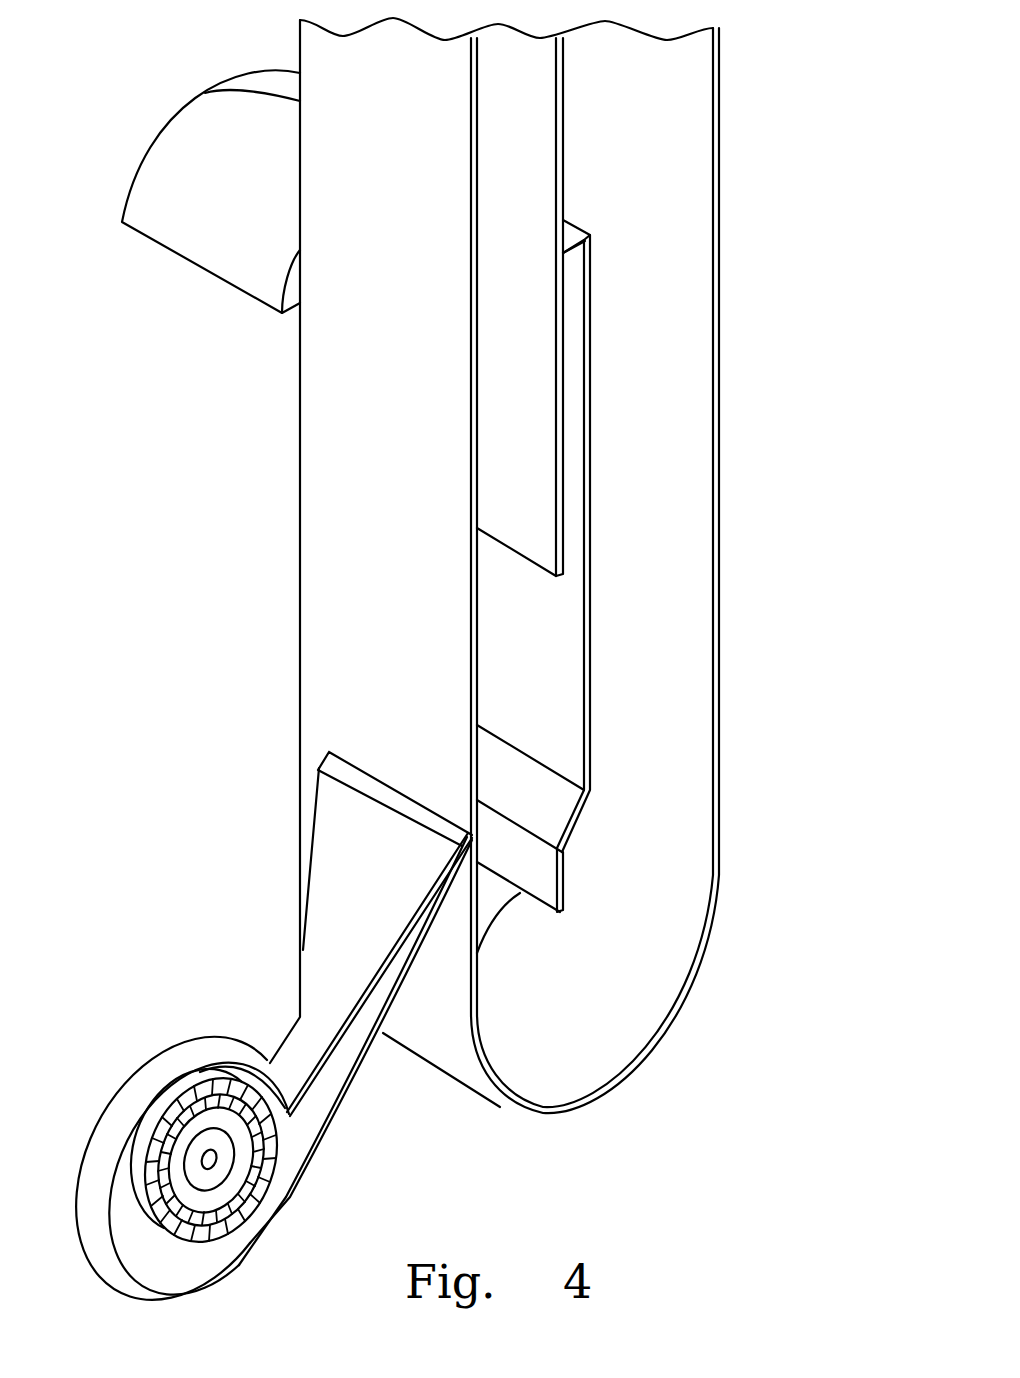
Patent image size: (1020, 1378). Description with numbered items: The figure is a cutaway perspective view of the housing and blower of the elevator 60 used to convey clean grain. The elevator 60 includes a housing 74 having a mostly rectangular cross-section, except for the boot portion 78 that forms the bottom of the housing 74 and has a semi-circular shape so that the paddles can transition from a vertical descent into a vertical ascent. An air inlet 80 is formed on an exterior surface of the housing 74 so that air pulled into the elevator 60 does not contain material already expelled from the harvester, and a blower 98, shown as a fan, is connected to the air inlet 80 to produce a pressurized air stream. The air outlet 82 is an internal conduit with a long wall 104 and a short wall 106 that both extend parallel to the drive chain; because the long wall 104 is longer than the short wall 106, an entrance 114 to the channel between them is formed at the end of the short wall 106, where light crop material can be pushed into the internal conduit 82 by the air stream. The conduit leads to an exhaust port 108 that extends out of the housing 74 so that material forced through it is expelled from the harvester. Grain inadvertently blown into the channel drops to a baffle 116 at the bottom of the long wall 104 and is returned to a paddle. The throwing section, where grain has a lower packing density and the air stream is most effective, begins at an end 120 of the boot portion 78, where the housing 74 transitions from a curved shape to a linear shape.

The elevator 60 is at (768, 352).
The housing 74 is at (720, 742).
The boot portion 78 is at (643, 1053).
The air inlet 80 is at (477, 837).
The air outlet 82 is at (537, 582).
The blower 98 is at (182, 1053).
The long wall 104 is at (588, 652).
The short wall 106 is at (560, 402).
The exhaust port 108 is at (208, 258).
The entrance 114 is at (573, 570).
The baffle 116 is at (555, 802).
The end of the boot portion 120 is at (458, 1032).